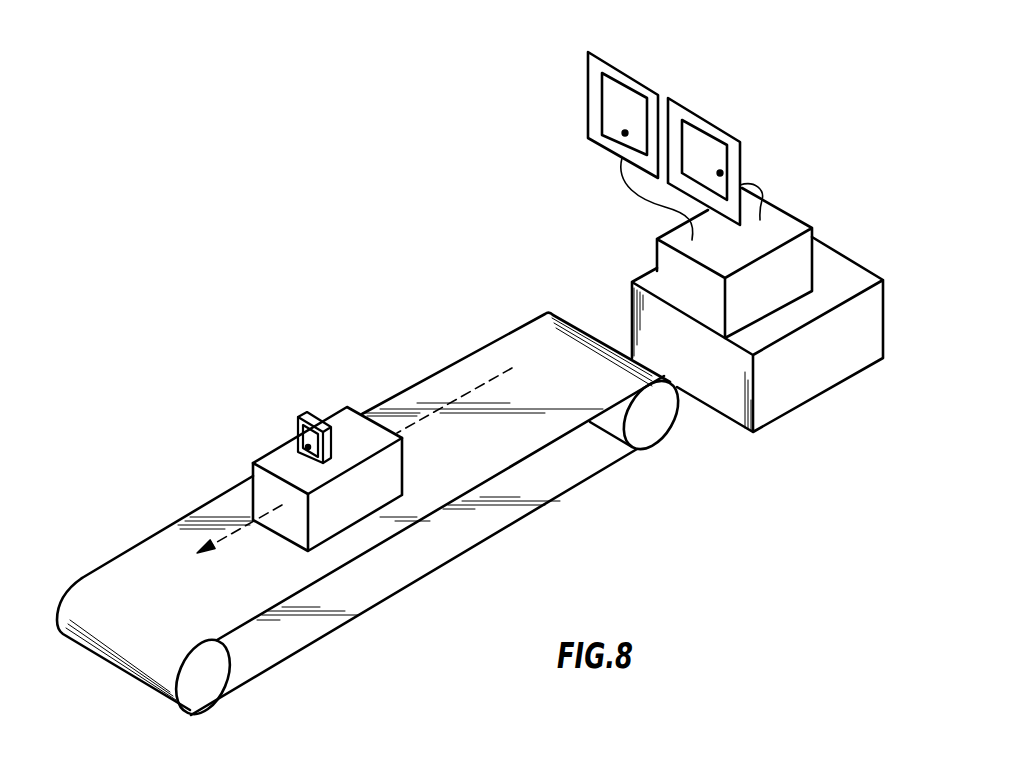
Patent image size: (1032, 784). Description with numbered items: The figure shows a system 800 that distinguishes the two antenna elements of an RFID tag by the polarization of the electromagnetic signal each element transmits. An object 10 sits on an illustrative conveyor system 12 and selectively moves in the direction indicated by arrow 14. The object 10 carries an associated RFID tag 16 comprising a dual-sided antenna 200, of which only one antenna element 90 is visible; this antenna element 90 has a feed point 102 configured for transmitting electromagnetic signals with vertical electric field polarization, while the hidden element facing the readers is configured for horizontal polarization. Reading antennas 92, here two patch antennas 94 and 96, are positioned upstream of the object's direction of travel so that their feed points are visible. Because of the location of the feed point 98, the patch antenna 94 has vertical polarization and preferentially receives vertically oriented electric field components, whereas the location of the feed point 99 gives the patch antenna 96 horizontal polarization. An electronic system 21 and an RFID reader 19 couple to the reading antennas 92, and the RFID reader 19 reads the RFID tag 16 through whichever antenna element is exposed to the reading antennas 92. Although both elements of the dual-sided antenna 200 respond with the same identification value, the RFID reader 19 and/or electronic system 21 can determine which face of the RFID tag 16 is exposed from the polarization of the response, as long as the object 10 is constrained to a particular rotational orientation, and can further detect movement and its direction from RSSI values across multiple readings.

The system 800 is at (229, 155).
The conveyor system 12 is at (498, 337).
The arrow 14 is at (233, 533).
The RFID tag 16 is at (331, 397).
The object 10 is at (253, 462).
The dual-sided antenna 200 is at (303, 415).
The antenna element 90 is at (298, 433).
The feed point 102 is at (308, 450).
The reading antennas 92 is at (696, 62).
The patch antenna 94 is at (588, 84).
The feed point 98 is at (625, 133).
The patch antenna 96 is at (742, 156).
The feed point 99 is at (720, 173).
The RFID reader 19 is at (797, 219).
The electronic system 21 is at (858, 263).